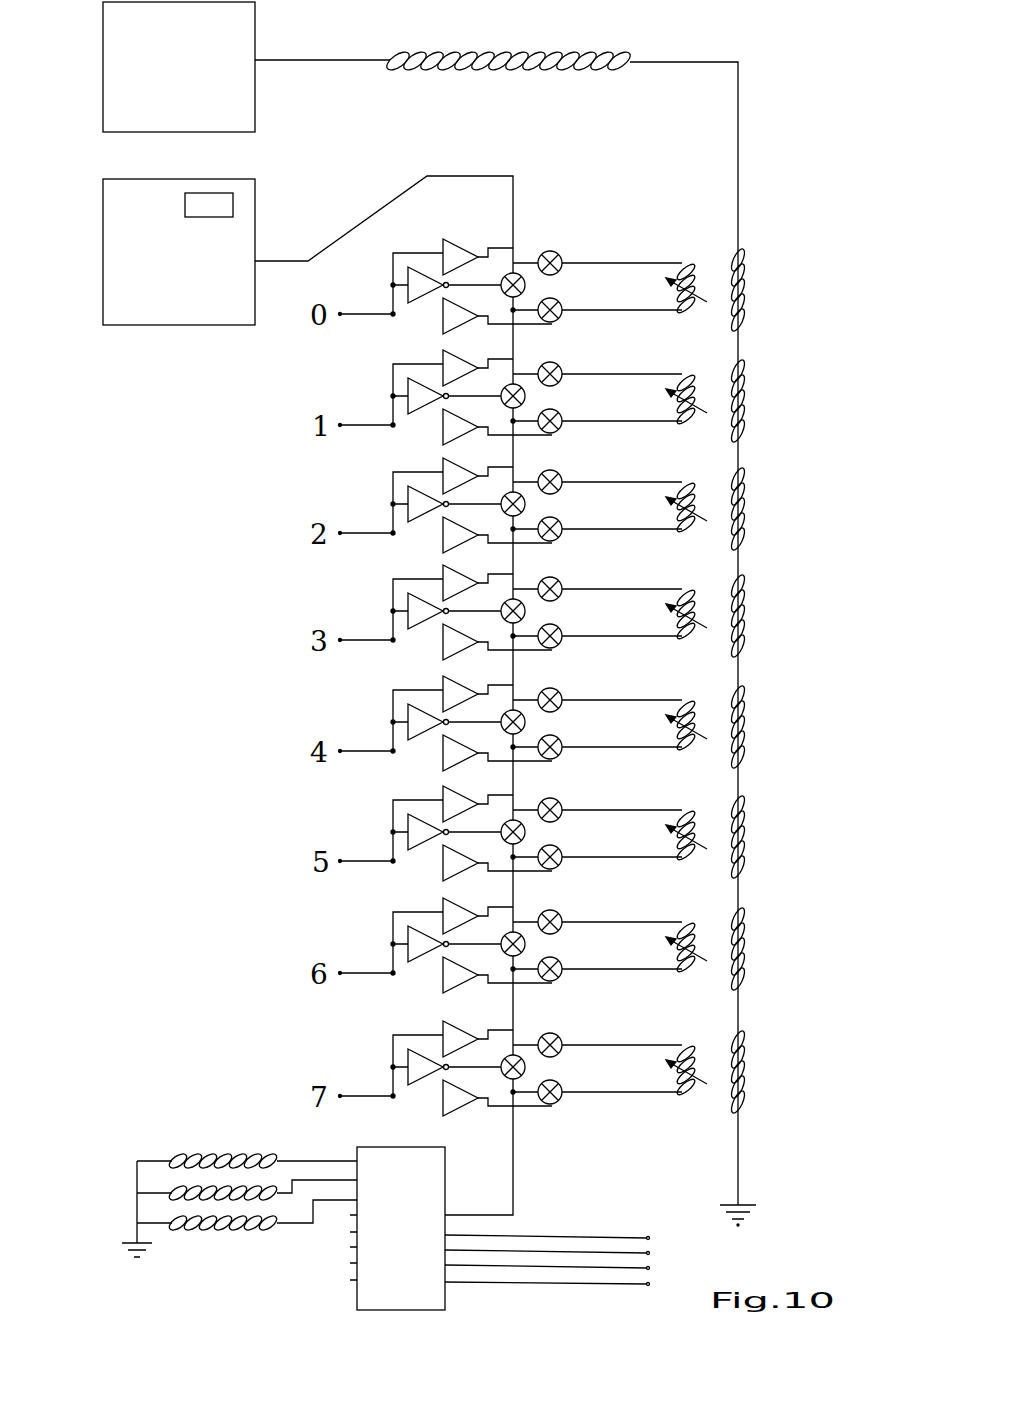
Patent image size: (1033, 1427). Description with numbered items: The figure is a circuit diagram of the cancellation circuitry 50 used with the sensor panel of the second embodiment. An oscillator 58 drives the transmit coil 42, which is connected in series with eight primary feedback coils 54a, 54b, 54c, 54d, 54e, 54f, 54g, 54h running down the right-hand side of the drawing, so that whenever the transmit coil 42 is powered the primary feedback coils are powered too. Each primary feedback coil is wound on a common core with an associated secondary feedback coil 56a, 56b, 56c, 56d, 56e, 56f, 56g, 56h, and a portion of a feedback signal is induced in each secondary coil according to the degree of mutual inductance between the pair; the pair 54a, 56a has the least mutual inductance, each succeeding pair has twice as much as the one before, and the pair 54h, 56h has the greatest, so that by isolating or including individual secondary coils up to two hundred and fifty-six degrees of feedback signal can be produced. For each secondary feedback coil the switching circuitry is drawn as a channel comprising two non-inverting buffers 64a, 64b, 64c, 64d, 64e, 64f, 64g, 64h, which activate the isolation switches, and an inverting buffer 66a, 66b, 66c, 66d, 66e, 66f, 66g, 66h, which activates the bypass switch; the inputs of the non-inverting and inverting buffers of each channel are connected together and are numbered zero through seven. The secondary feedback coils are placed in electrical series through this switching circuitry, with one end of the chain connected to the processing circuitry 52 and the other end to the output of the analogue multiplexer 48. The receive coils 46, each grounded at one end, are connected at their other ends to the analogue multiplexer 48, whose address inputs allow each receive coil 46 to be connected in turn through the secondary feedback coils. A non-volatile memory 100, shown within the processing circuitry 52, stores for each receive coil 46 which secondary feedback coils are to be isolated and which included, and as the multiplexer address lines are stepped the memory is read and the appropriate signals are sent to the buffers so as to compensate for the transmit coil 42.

The transmit coil 42 is at (614, 46).
The receive coils 46 is at (265, 1258).
The analogue multiplexer 48 is at (414, 1237).
The cancellation circuitry 50 is at (242, 797).
The processing circuitry 52 is at (189, 280).
The oscillator 58 is at (189, 77).
The non-volatile memory 100 is at (234, 204).
The primary feedback coil 54a is at (746, 303).
The primary feedback coil 54b is at (746, 414).
The primary feedback coil 54c is at (746, 522).
The primary feedback coil 54d is at (746, 629).
The primary feedback coil 54e is at (746, 740).
The primary feedback coil 54f is at (746, 850).
The primary feedback coil 54g is at (746, 962).
The primary feedback coil 54h is at (746, 1085).
The secondary feedback coil 56a is at (696, 274).
The secondary feedback coil 56b is at (696, 385).
The secondary feedback coil 56c is at (696, 493).
The secondary feedback coil 56d is at (696, 600).
The secondary feedback coil 56e is at (696, 711).
The secondary feedback coil 56f is at (696, 821).
The secondary feedback coil 56g is at (696, 933).
The secondary feedback coil 56h is at (696, 1056).
The non-inverting buffers 64a is at (447, 242).
The non-inverting buffers 64b is at (447, 353).
The non-inverting buffers 64c is at (447, 461).
The non-inverting buffers 64d is at (447, 568).
The non-inverting buffers 64e is at (447, 679).
The non-inverting buffers 64f is at (447, 789).
The non-inverting buffers 64g is at (447, 901).
The non-inverting buffers 64h is at (447, 1024).
The inverting buffer 66a is at (404, 287).
The inverting buffer 66b is at (404, 398).
The inverting buffer 66c is at (404, 506).
The inverting buffer 66d is at (404, 613).
The inverting buffer 66e is at (404, 724).
The inverting buffer 66f is at (404, 834).
The inverting buffer 66g is at (404, 946).
The inverting buffer 66h is at (404, 1069).